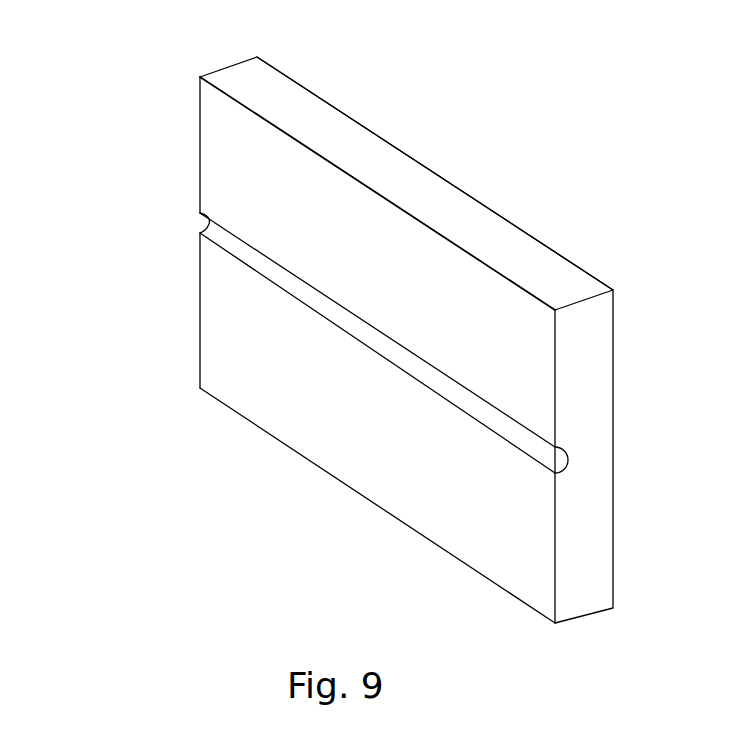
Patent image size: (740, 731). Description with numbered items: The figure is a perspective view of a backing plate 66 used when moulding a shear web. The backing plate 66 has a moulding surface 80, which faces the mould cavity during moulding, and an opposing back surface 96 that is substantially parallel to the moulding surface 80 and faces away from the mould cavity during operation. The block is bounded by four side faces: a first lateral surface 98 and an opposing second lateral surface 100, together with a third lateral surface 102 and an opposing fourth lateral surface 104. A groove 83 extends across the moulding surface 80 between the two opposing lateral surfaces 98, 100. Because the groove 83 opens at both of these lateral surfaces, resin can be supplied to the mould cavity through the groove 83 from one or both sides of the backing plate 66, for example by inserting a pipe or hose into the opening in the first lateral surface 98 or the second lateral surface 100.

The backing plate 66 is at (471, 113).
The moulding surface 80 is at (400, 293).
The third lateral surface 102 is at (528, 260).
The back surface 96 is at (292, 80).
The first lateral surface 98 is at (590, 445).
The second lateral surface 100 is at (200, 142).
The fourth lateral surface 104 is at (360, 493).
The groove 83 is at (252, 260).